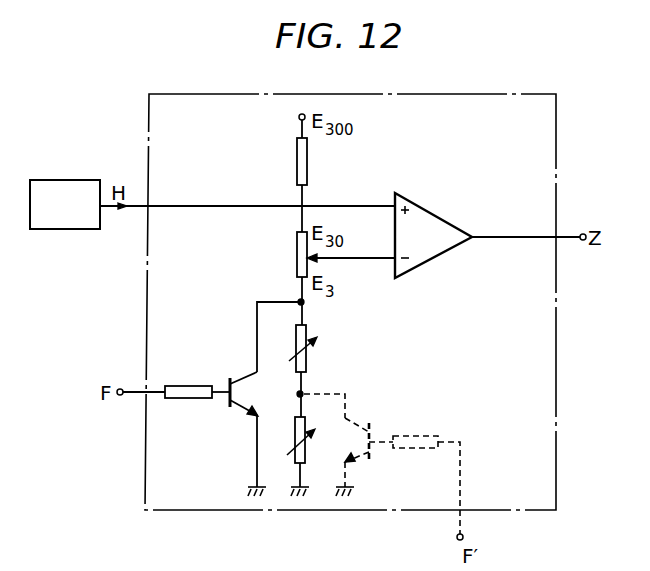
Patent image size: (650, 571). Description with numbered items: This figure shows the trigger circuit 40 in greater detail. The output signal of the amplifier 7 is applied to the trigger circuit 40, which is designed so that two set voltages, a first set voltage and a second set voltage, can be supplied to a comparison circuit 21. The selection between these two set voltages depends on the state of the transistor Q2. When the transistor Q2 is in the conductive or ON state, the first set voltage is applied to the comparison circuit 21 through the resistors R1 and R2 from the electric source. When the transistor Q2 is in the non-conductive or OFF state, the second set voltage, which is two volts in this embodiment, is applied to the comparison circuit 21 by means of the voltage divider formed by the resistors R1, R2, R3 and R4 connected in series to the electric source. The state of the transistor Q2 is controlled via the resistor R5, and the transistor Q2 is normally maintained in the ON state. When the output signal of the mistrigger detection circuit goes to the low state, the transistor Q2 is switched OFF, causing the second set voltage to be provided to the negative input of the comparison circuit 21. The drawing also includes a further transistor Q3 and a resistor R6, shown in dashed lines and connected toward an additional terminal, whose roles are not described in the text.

The amplifier 7 is at (70, 184).
The comparison circuit 21 is at (440, 223).
The trigger circuit 40 is at (478, 104).
The resistor R1 is at (316, 161).
The resistor R2 is at (329, 254).
The resistor R3 is at (312, 352).
The resistor R4 is at (308, 447).
The resistor R5 is at (188, 379).
The resistor R6 is at (415, 431).
The transistor Q2 is at (248, 396).
The transistor Q3 is at (349, 440).